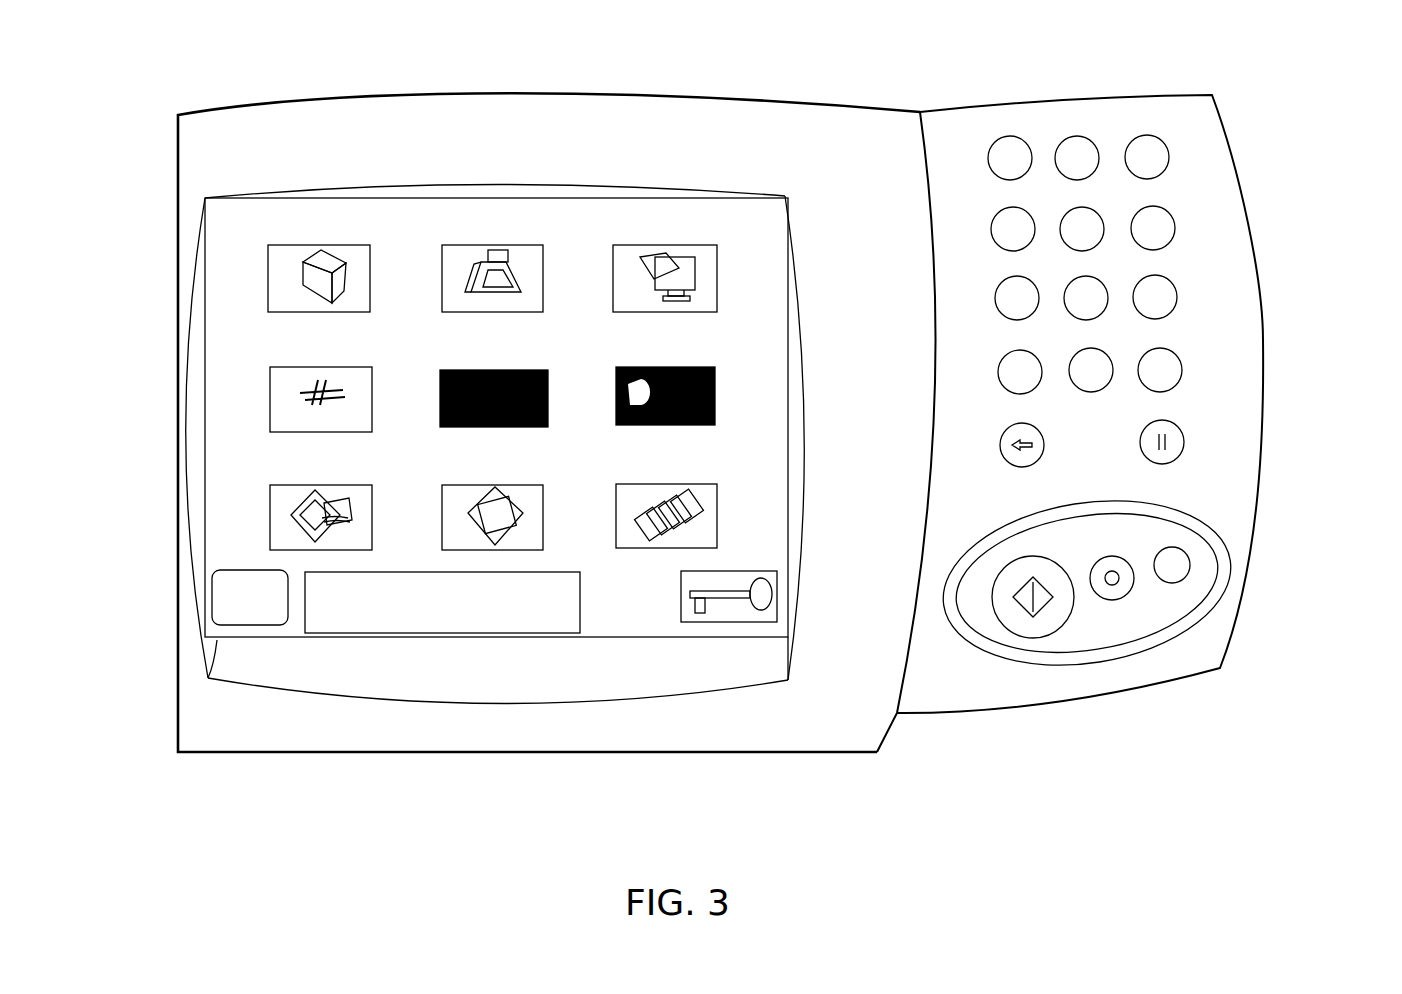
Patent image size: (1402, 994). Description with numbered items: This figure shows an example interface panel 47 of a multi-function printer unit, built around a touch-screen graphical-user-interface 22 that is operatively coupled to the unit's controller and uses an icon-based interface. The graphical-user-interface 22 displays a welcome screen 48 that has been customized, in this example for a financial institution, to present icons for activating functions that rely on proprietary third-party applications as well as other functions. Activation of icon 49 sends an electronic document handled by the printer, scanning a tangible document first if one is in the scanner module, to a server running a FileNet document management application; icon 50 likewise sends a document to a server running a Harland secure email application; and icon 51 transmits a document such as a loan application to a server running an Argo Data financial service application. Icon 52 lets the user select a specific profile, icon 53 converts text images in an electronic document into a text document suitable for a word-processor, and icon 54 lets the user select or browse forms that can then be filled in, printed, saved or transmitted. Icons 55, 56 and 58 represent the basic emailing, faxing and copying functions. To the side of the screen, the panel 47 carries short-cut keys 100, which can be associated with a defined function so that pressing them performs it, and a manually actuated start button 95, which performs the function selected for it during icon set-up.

The graphical-user-interface 22 is at (222, 393).
The interface panel 47 is at (885, 143).
The welcome screen 48 is at (630, 165).
The icon 49 is at (357, 411).
The icon 50 is at (548, 402).
The icon 51 is at (715, 410).
The icon 52 is at (357, 527).
The icon 53 is at (533, 528).
The icon 54 is at (705, 527).
The icon 55 is at (705, 291).
The icon 56 is at (533, 288).
The icon 58 is at (356, 288).
The start button 95 is at (1033, 638).
The short-cut keys 100 is at (1273, 138).